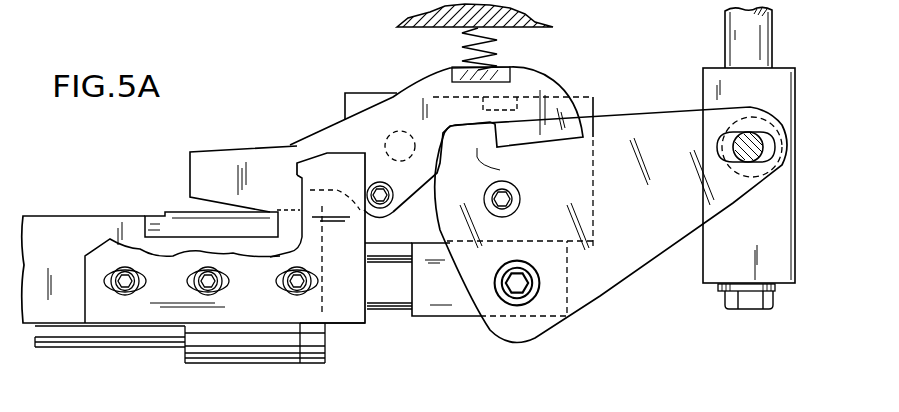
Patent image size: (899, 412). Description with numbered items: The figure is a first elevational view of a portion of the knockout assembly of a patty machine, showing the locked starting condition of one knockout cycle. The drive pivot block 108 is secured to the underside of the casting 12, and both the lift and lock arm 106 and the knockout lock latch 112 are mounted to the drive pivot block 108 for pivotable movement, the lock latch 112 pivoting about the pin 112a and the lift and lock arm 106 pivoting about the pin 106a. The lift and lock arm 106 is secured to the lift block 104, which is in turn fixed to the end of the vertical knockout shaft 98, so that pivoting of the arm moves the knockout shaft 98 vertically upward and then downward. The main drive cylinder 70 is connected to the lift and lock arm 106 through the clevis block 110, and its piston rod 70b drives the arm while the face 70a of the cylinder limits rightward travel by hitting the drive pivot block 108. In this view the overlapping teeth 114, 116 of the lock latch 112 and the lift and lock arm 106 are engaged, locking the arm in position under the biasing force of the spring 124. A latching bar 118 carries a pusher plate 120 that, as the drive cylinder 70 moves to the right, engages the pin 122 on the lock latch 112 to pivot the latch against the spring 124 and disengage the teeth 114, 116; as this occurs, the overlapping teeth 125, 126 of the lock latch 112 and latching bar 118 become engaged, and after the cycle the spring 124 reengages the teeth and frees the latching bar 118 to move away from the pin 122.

The casting 12 is at (548, 18).
The main drive cylinder 70 is at (108, 334).
The face of the drive cylinder 70a is at (331, 349).
The piston rod 70b is at (392, 289).
The vertical knockout shaft 98 is at (763, 43).
The lift block 104 is at (773, 241).
The lift and lock arm 106 is at (627, 249).
The pin 106a is at (510, 198).
The drive pivot block 108 is at (597, 100).
The clevis block 110 is at (445, 296).
The knockout lock latch 112 is at (398, 103).
The pin 112a is at (400, 143).
The tooth of the lock latch 114 is at (557, 130).
The tooth of the lift and lock arm 116 is at (500, 170).
The latching bar 118 is at (67, 231).
The pusher plate 120 is at (350, 313).
The pin 122 is at (378, 184).
The spring 124 is at (500, 55).
The tooth of the lock latch 125 is at (263, 205).
The tooth of the latching bar 126 is at (287, 216).